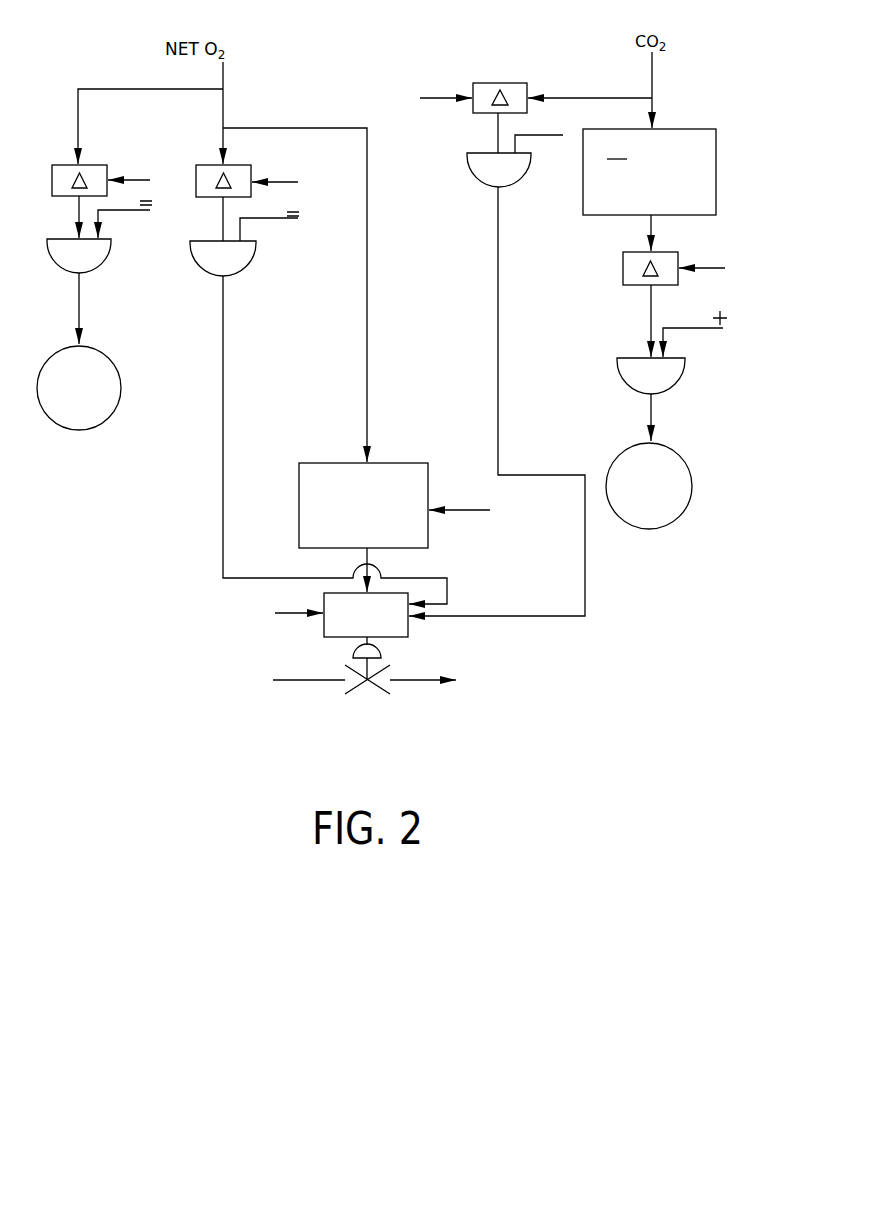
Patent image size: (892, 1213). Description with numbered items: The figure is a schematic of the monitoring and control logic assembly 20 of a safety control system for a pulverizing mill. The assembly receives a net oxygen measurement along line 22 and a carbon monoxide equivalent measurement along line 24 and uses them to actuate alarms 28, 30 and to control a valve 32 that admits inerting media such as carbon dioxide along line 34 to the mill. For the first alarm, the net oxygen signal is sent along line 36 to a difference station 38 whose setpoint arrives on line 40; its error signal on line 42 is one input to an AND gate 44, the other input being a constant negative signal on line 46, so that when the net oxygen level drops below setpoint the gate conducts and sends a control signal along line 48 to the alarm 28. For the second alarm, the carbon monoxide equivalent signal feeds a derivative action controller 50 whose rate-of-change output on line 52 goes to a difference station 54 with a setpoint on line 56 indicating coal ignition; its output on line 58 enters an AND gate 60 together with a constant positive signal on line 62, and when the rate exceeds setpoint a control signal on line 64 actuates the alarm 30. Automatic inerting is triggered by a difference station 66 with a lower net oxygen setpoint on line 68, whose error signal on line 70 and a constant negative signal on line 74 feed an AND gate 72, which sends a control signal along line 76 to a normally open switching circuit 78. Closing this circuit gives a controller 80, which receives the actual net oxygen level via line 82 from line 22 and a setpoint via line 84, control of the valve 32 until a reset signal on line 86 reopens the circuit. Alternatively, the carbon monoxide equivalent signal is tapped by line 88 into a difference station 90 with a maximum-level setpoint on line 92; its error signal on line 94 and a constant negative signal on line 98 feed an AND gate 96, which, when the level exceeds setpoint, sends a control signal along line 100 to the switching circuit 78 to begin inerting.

The monitoring and control logic assembly 20 is at (443, 76).
The line 22 is at (228, 104).
The line 24 is at (655, 92).
The alarm 28 is at (69, 417).
The alarm 30 is at (639, 515).
The valve 32 is at (378, 660).
The line 34 is at (400, 690).
The line 36 is at (103, 89).
The difference station 38 is at (52, 180).
The line 40 is at (140, 180).
The line 42 is at (75, 218).
The AND gate 44 is at (66, 275).
The line 46 is at (126, 212).
The line 48 is at (80, 296).
The derivative action controller 50 is at (716, 140).
The line 52 is at (653, 225).
The difference station 54 is at (623, 270).
The line 56 is at (710, 268).
The line 58 is at (648, 312).
The AND gate 60 is at (622, 362).
The line 62 is at (695, 330).
The line 64 is at (653, 405).
The difference station 66 is at (236, 165).
The line 68 is at (282, 182).
The line 70 is at (220, 218).
The AND gate 72 is at (202, 275).
The line 74 is at (266, 220).
The line 76 is at (224, 356).
The switching circuit 78 is at (324, 630).
The controller 80 is at (351, 541).
The line 82 is at (368, 244).
The line 84 is at (460, 510).
The line 86 is at (298, 612).
The line 88 is at (598, 98).
The difference station 90 is at (497, 83).
The line 92 is at (447, 100).
The line 94 is at (497, 132).
The AND gate 96 is at (496, 190).
The line 98 is at (537, 135).
The line 100 is at (497, 285).